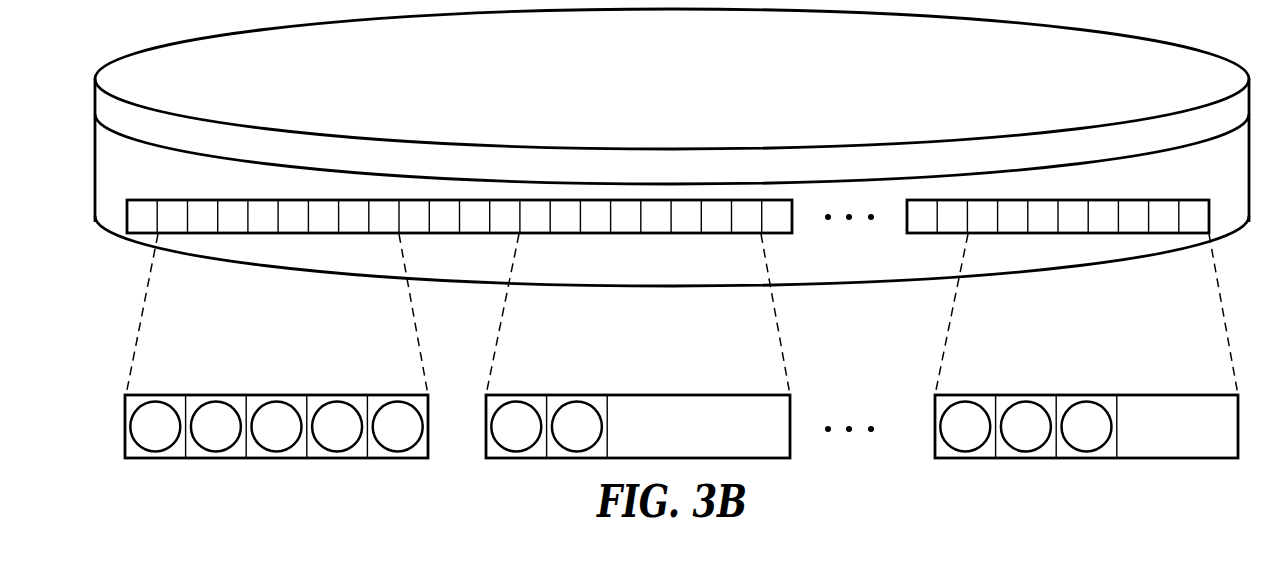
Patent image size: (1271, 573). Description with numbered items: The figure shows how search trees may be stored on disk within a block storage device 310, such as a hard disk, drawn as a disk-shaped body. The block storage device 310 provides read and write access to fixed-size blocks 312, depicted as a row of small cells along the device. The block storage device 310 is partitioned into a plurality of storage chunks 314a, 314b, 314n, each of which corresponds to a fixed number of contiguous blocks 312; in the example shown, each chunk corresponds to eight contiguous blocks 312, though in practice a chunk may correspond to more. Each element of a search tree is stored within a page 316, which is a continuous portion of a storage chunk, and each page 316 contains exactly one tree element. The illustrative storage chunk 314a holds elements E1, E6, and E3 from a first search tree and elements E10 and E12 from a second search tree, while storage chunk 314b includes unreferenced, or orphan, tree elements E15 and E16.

The block storage device 310 is at (654, 86).
The fixed-size blocks 312 is at (177, 199).
The storage chunk 314a is at (276, 390).
The storage chunk 314b is at (642, 352).
The storage chunk 314n is at (1093, 352).
The page 316 is at (178, 395).